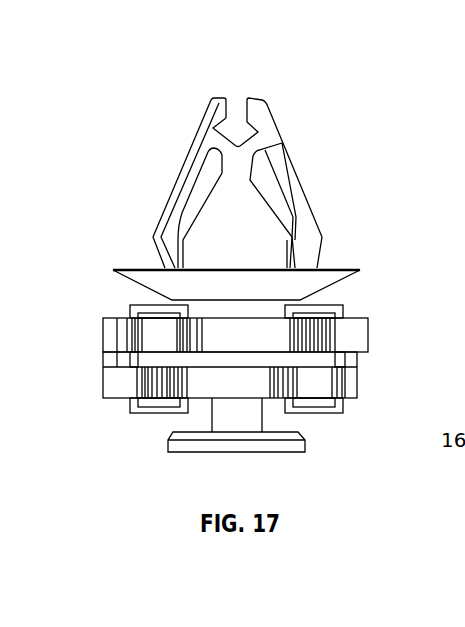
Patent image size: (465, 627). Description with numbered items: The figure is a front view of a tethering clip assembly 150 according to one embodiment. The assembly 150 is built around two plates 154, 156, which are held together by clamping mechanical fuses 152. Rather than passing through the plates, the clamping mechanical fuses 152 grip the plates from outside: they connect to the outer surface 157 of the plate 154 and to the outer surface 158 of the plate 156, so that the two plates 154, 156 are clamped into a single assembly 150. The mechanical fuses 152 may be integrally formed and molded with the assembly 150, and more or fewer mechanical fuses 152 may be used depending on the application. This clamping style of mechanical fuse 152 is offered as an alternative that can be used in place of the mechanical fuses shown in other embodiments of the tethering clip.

The tethering clip assembly 150 is at (134, 100).
The clamping mechanical fuses 152 is at (343, 308).
The plate 154 is at (266, 400).
The plate 156 is at (215, 318).
The outer surface 157 is at (232, 400).
The outer surface 158 is at (257, 318).